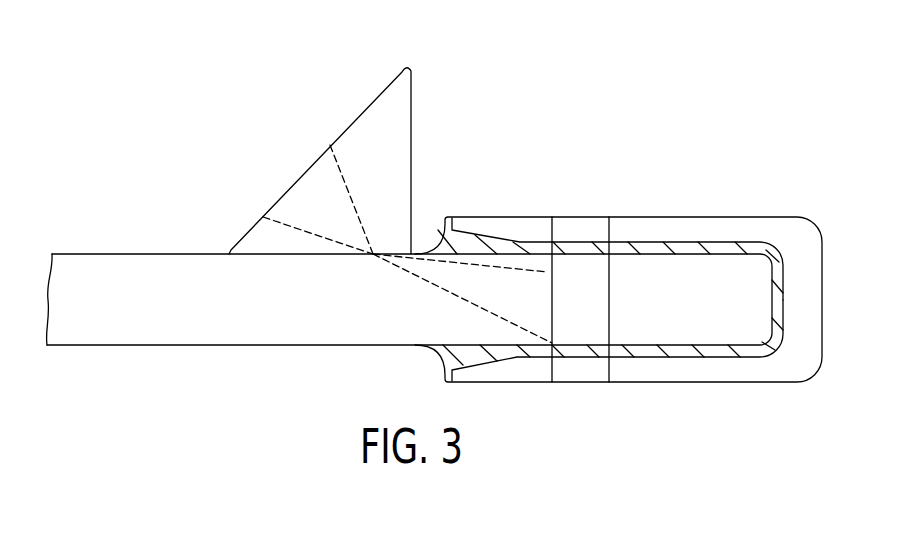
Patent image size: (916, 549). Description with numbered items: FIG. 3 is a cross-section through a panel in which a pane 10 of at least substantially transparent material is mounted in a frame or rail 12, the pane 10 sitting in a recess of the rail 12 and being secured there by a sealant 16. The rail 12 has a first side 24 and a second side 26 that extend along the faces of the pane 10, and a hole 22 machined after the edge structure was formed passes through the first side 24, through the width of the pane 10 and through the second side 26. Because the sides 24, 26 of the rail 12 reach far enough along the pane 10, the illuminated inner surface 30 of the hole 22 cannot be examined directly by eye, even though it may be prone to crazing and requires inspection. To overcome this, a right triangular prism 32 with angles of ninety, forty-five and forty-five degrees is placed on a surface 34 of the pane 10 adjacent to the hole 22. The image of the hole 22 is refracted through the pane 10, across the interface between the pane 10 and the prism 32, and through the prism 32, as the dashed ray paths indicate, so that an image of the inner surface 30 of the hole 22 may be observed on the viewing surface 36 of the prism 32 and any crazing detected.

The pane 10 is at (113, 345).
The rail 12 is at (822, 283).
The sealant 16 is at (660, 352).
The hole 22 is at (605, 230).
The first side 24 is at (722, 217).
The second side 26 is at (722, 382).
The inner surface 30 is at (607, 303).
The prism 32 is at (413, 110).
The surface 34 is at (135, 254).
The viewing surface 36 is at (353, 118).